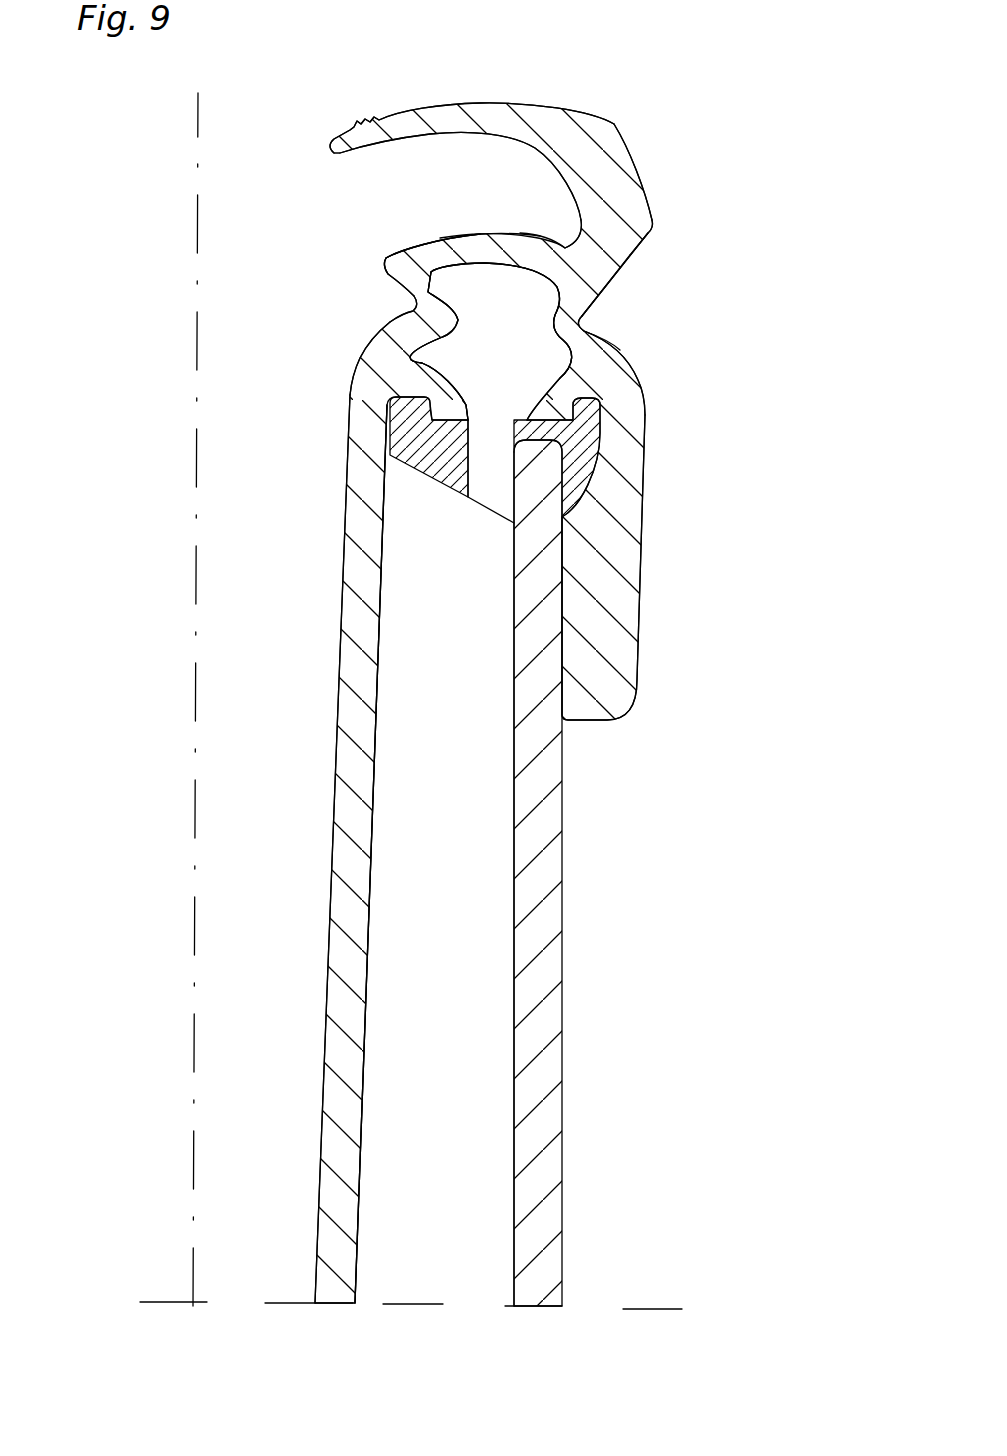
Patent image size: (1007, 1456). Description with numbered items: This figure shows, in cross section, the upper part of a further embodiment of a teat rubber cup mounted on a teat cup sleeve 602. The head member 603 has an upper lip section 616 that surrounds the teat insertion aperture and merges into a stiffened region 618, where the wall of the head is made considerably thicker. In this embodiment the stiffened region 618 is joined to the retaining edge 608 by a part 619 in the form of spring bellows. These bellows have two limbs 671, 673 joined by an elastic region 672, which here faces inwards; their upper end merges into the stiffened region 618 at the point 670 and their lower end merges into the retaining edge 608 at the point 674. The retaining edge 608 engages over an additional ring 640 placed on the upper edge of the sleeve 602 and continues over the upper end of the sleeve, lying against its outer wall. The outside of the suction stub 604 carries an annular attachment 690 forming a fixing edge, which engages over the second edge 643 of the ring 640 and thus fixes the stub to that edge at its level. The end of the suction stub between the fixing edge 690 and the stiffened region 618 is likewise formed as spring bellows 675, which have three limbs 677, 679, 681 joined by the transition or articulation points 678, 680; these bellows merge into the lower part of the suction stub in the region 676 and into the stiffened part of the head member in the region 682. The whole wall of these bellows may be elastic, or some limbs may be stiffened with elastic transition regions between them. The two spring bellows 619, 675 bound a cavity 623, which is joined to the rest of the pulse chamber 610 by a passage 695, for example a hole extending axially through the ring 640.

The head member 603 is at (598, 84).
The lip section 616 is at (425, 115).
The stiffened region 618 is at (658, 163).
The spring bellows part 619 is at (641, 273).
The merging point 670 is at (613, 232).
The limb 671 is at (590, 267).
The limb 673 is at (577, 336).
The merging point 674 is at (617, 383).
The retaining edge 608 is at (618, 677).
The ring 640 is at (588, 478).
The teat cup sleeve 602 is at (540, 980).
The suction stub 604 is at (350, 1027).
The pulse chamber 610 is at (478, 879).
The second edge 643 is at (430, 456).
The passage 695 is at (500, 473).
The cavity 623 is at (515, 354).
The transition or articulation point 678 is at (462, 305).
The elastic region 672 is at (560, 328).
The annular attachment 690 is at (430, 383).
The merging region 676 is at (372, 356).
The limb 677 is at (397, 320).
The spring bellows 675 is at (374, 260).
The limb 679 is at (406, 276).
The transition or articulation point 680 is at (409, 284).
The limb 681 is at (478, 247).
The merging region 682 is at (547, 253).